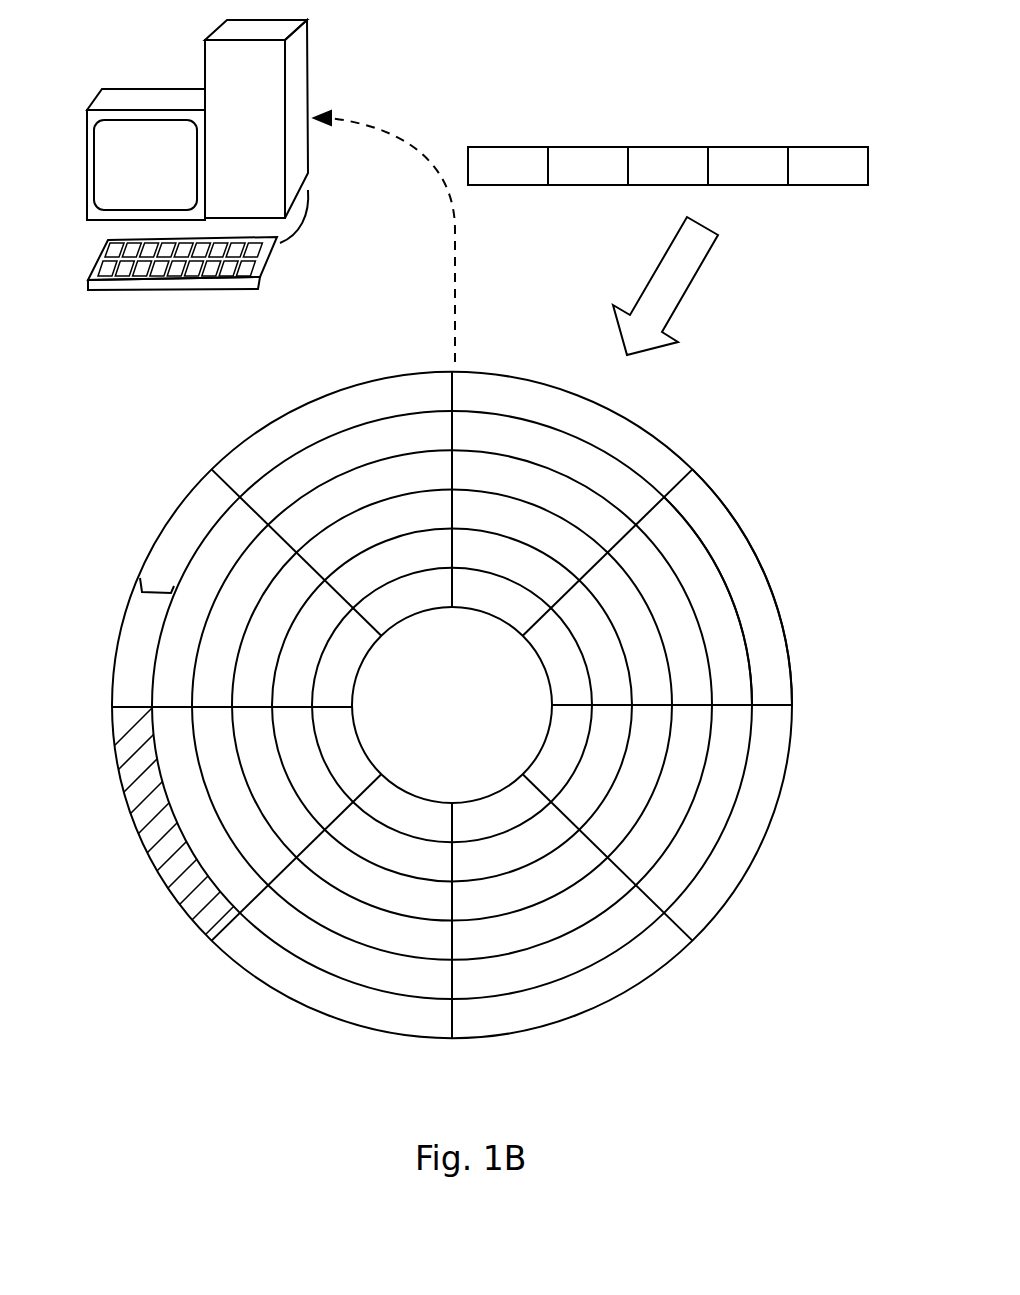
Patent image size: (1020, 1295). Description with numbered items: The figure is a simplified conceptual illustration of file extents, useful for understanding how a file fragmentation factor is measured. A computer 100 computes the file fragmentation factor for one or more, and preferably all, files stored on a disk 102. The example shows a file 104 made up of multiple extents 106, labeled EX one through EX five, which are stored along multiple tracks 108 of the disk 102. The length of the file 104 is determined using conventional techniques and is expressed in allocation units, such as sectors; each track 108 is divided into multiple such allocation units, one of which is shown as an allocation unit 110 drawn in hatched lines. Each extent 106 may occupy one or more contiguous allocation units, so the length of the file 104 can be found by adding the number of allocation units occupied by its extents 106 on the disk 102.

The computer 100 is at (308, 50).
The disk 102 is at (474, 718).
The file 104 is at (622, 112).
The extents 106 is at (668, 146).
The track 108 is at (155, 593).
The allocation unit 110 is at (143, 830).